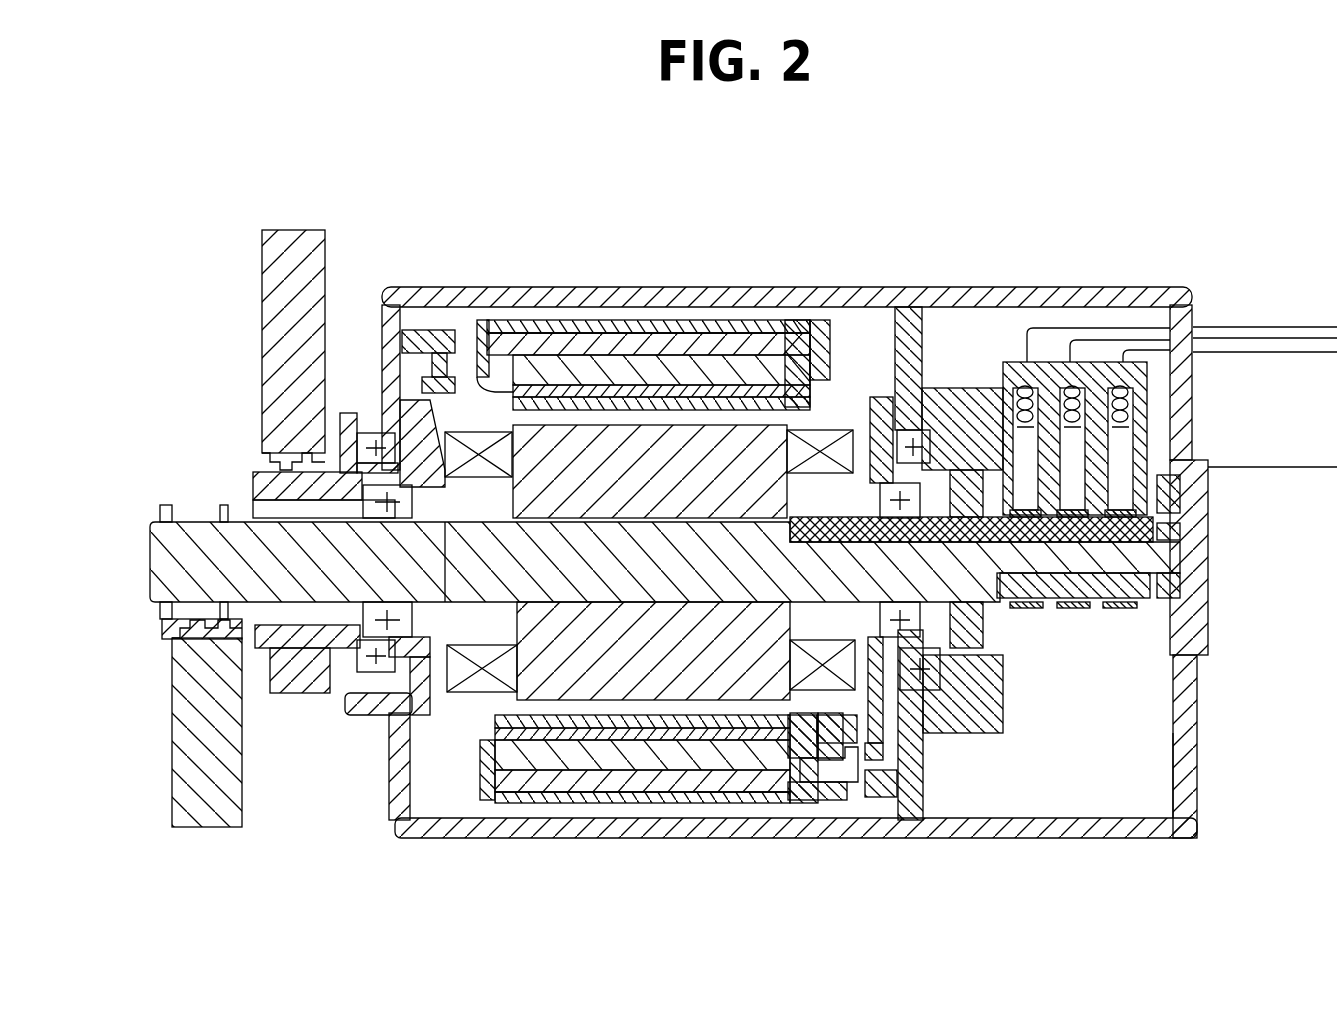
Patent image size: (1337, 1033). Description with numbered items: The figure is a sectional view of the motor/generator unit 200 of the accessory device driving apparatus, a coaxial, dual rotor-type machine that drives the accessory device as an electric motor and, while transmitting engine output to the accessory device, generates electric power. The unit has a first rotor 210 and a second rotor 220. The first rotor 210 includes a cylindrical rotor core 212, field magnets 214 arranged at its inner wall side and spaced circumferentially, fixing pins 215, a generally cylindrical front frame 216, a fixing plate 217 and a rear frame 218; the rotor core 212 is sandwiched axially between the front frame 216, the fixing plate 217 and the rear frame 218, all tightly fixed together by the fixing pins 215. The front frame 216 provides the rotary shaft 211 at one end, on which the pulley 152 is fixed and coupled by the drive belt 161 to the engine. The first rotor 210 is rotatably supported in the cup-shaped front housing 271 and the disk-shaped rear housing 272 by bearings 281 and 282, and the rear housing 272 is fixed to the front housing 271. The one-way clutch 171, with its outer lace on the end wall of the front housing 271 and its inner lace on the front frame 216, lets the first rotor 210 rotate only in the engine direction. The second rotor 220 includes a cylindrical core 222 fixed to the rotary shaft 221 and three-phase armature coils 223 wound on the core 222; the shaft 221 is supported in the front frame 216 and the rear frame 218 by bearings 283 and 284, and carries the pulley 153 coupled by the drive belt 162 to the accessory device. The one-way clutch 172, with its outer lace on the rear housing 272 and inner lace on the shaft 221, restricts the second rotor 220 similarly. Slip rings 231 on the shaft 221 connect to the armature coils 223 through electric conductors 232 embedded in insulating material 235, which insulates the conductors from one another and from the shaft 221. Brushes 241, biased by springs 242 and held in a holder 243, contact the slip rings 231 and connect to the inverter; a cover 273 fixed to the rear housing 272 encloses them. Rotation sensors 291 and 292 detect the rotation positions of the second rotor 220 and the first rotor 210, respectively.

The pulley 152 is at (268, 460).
The pulley 153 is at (197, 510).
The drive belt 161 is at (283, 300).
The drive belt 162 is at (207, 807).
The one-way clutch 171 is at (422, 330).
The one-way clutch 172 is at (1052, 825).
The motor/generator unit 200 is at (876, 262).
The first rotor 210 is at (667, 490).
The rotary shaft 211 is at (302, 640).
The rotor core 212 is at (628, 372).
The field magnets 214 is at (580, 387).
The fixing pins 215 is at (530, 345).
The front frame 216 is at (482, 370).
The fixing plate 217 is at (792, 357).
The rear frame 218 is at (827, 350).
The second rotor 220 is at (650, 673).
The rotary shaft 221 is at (443, 582).
The cylindrical core 222 is at (694, 680).
The three-phase armature coils 223 is at (822, 682).
The slip rings 231 is at (1083, 608).
The electric conductors 232 is at (1127, 608).
The insulating material 235 is at (1040, 651).
The brushes 241 is at (1121, 447).
The springs 242 is at (1170, 347).
The holder 243 is at (1117, 375).
The front housing 271 is at (525, 834).
The rear housing 272 is at (912, 797).
The cover 273 is at (1057, 293).
The bearing 281 is at (358, 428).
The bearing 282 is at (908, 428).
The bearing 283 is at (362, 640).
The bearing 284 is at (982, 655).
The rotation sensor 291 is at (1185, 492).
The rotation sensor 292 is at (876, 792).